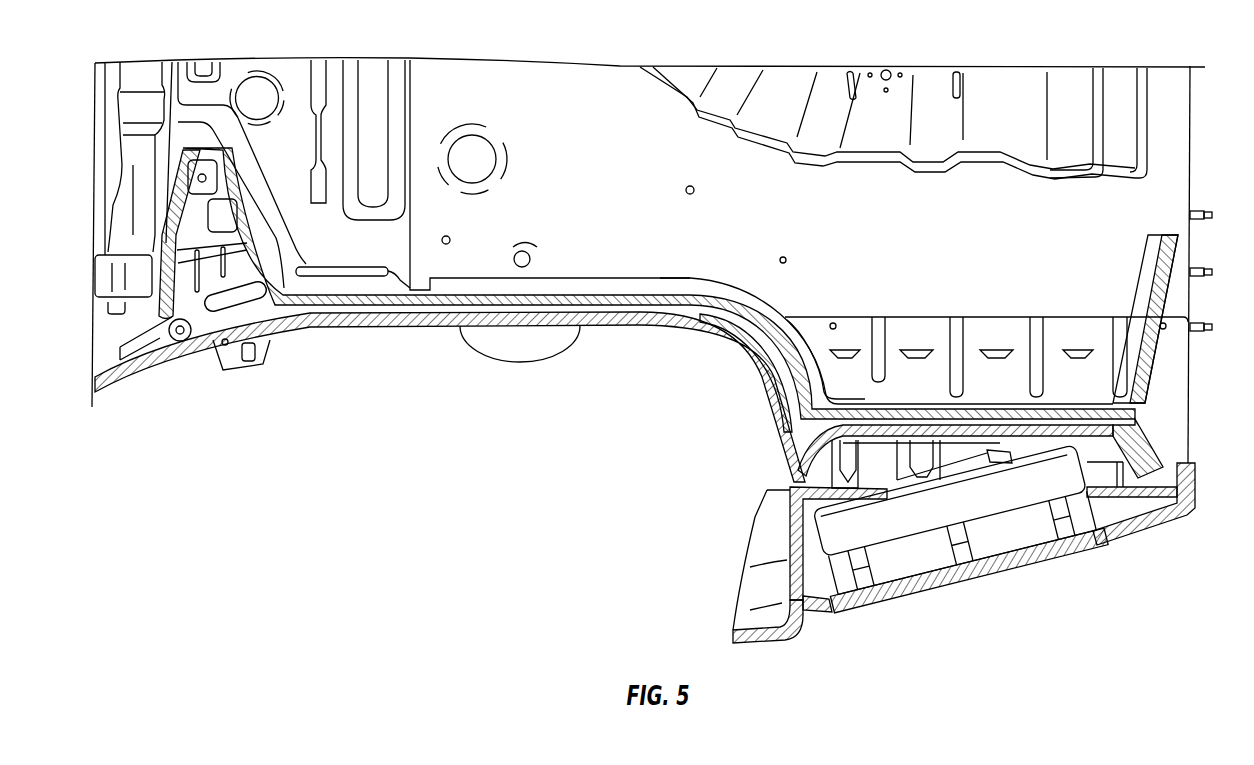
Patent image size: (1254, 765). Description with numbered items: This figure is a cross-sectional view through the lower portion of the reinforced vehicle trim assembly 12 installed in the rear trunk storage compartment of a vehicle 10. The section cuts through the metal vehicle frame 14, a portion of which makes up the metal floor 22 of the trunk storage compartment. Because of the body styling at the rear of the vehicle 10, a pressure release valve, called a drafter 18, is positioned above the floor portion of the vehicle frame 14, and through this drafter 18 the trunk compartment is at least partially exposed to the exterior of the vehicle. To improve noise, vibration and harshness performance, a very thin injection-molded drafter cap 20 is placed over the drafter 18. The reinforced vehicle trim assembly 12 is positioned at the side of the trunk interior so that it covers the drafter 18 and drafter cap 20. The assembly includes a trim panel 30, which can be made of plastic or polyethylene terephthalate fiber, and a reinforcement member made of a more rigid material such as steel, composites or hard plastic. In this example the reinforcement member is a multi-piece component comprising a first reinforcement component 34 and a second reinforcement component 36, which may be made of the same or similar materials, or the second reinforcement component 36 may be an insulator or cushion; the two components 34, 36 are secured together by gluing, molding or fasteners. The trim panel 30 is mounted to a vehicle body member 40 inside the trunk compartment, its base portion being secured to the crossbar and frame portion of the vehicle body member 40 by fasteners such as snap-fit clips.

The vehicle 10 is at (466, 482).
The reinforced vehicle trim assembly 12 is at (1136, 431).
The vehicle frame 14 is at (130, 215).
The drafter 18 is at (1083, 517).
The drafter cap 20 is at (1140, 462).
The metal floor 22 is at (541, 80).
The trim panel 30 is at (1147, 290).
The first reinforcement component 34 is at (827, 445).
The second reinforcement component 36 is at (790, 495).
The vehicle body member 40 is at (760, 377).